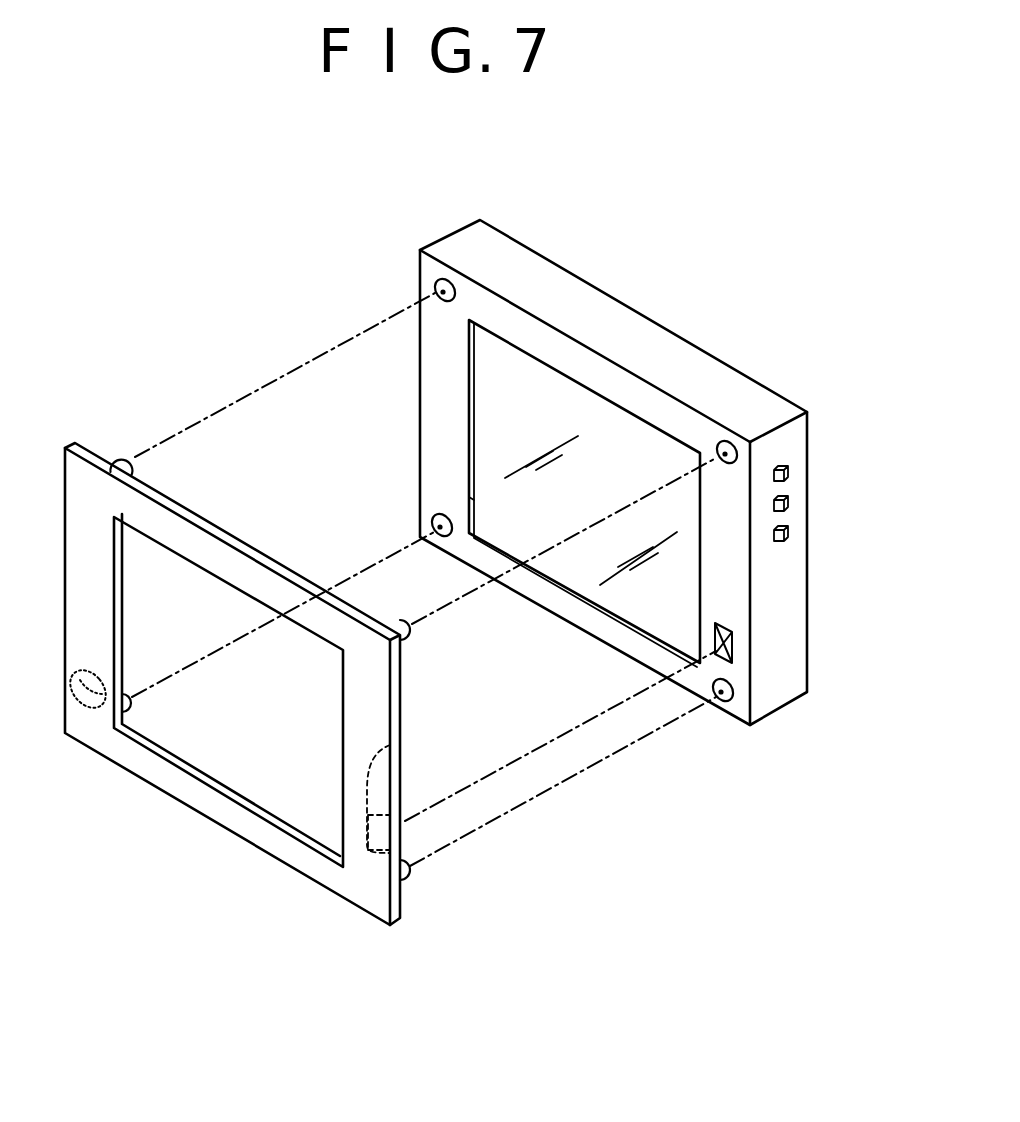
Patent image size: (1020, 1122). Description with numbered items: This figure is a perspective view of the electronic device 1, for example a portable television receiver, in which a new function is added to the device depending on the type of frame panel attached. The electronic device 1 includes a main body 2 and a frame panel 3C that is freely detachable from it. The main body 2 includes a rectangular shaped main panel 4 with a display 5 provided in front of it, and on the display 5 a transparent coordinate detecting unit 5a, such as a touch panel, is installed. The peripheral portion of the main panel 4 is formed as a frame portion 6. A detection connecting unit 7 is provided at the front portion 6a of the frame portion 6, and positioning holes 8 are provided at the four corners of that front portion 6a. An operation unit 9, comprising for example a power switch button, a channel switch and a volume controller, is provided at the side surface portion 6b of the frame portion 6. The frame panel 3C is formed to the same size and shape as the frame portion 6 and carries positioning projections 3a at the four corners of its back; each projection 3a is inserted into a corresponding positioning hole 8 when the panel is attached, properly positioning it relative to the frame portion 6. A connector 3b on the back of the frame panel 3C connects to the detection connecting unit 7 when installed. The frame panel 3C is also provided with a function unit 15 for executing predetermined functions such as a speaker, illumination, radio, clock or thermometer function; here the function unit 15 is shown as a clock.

The electronic device 1 is at (184, 264).
The main body 2 is at (605, 312).
The frame panel 3C is at (262, 842).
The positioning projections 3a is at (121, 456).
The connector 3b is at (392, 745).
The main panel 4 is at (648, 340).
The display 5 is at (510, 443).
The transparent coordinate detecting unit 5a is at (493, 497).
The frame portion 6 is at (445, 373).
The front portion 6a is at (442, 405).
The side surface portion 6b is at (778, 690).
The detection connecting unit 7 is at (733, 637).
The positioning holes 8 is at (444, 282).
The operation unit 9 is at (790, 476).
The function unit 15 is at (80, 707).